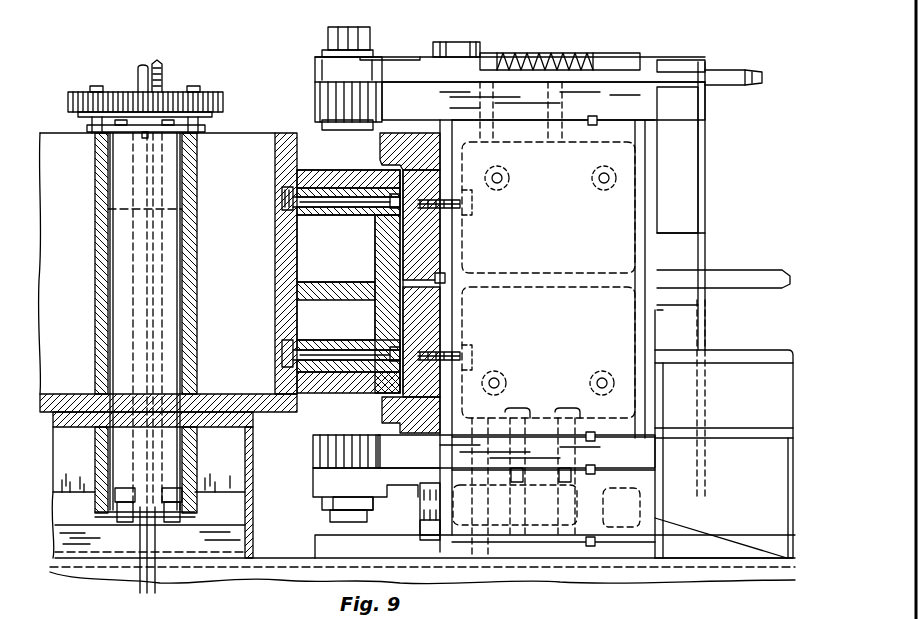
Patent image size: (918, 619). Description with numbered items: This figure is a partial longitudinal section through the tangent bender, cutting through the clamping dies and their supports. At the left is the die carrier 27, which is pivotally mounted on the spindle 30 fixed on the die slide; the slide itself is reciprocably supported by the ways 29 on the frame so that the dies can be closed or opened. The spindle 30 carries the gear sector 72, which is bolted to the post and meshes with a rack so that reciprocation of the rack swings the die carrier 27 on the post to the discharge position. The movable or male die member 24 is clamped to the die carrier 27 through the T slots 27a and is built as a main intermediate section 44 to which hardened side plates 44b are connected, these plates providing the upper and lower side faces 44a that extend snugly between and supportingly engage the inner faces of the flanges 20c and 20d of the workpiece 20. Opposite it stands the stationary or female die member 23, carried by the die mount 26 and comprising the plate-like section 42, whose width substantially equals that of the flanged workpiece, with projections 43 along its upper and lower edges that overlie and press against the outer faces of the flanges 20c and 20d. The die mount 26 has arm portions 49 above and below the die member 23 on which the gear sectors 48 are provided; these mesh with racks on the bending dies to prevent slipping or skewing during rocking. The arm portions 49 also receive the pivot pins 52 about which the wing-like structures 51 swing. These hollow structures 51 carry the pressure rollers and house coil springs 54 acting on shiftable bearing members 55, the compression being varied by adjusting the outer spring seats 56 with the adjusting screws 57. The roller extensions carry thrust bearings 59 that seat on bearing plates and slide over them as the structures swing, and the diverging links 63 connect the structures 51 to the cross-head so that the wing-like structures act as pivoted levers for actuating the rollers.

The cabinet section 20 is at (402, 268).
The front flange 20c is at (398, 165).
The back flange 20d is at (398, 497).
The stationary die member 23 is at (442, 240).
The movable die member 24 is at (327, 165).
The die mount 26 is at (622, 214).
The die carrier 27 is at (231, 137).
The T slots 27a is at (281, 197).
The ways 29 is at (505, 566).
The spindle 30 is at (175, 270).
The plate-like section 42 is at (432, 320).
The projections 43 is at (381, 156).
The main intermediate section 44 is at (380, 240).
The side faces 44a is at (342, 168).
The side plates 44b is at (316, 213).
The gear sectors 48 is at (314, 472).
The arm portions 49 is at (398, 487).
The wing-like structures 51 is at (395, 72).
The pivot pins 52 is at (358, 37).
The coil springs 54 is at (540, 60).
The bearing members 55 is at (497, 58).
The spring seats 56 is at (636, 62).
The adjusting screws 57 is at (727, 73).
The thrust bearings 59 is at (419, 528).
The links 63 is at (737, 272).
The gear sector 72 is at (214, 99).